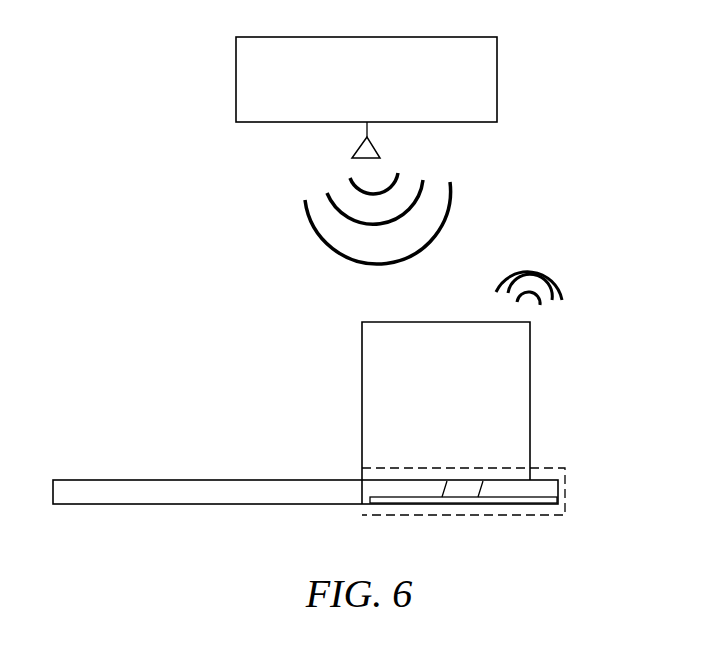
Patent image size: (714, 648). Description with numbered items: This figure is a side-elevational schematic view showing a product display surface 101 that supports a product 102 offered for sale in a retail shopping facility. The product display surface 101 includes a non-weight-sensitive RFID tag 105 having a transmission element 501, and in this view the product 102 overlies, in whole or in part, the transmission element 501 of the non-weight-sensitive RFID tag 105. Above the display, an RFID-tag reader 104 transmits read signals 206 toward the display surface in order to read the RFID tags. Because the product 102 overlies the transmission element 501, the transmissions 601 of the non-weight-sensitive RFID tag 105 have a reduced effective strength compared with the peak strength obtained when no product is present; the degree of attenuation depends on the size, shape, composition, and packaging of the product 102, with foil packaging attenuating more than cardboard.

The RFID-tag reader 104 is at (236, 72).
The read signals 206 is at (326, 236).
The transmissions 601 is at (547, 273).
The product 102 is at (373, 369).
The product display surface 101 is at (253, 536).
The non-weight-sensitive RFID tag 105 is at (540, 465).
The transmission element 501 is at (410, 498).